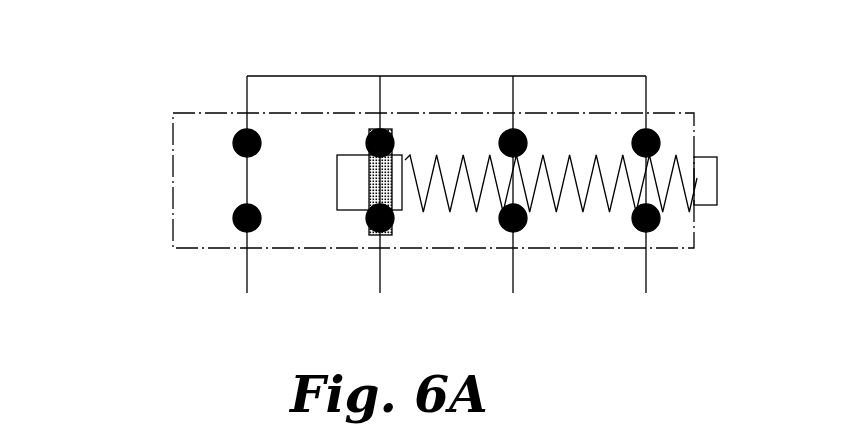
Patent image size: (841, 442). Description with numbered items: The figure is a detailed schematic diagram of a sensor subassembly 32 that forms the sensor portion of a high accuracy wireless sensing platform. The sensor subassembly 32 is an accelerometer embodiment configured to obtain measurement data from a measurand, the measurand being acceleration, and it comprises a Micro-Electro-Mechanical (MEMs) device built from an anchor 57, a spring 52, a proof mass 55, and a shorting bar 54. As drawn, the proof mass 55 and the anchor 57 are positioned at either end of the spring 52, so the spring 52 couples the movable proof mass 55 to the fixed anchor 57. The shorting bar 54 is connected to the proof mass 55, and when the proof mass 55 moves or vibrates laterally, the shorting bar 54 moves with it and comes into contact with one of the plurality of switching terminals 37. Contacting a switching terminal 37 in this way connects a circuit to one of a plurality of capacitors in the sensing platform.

The sensor subassembly 32 is at (133, 76).
The switching terminals 37 is at (519, 129).
The spring 52 is at (681, 129).
The shorting bar 54 is at (385, 236).
The proof mass 55 is at (337, 210).
The anchor 57 is at (717, 180).